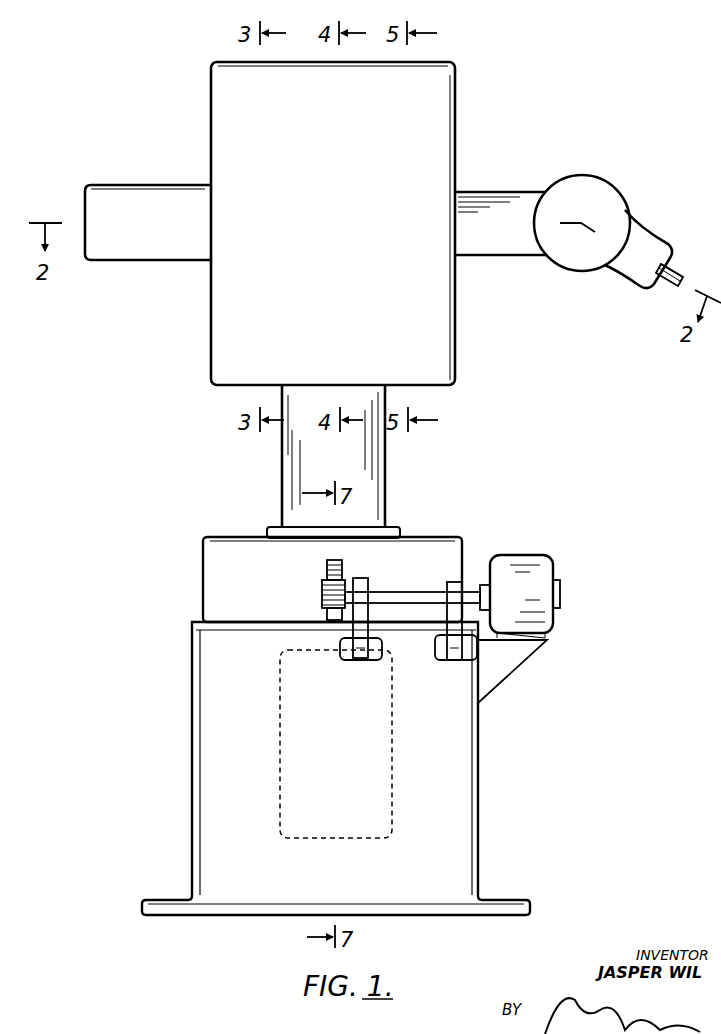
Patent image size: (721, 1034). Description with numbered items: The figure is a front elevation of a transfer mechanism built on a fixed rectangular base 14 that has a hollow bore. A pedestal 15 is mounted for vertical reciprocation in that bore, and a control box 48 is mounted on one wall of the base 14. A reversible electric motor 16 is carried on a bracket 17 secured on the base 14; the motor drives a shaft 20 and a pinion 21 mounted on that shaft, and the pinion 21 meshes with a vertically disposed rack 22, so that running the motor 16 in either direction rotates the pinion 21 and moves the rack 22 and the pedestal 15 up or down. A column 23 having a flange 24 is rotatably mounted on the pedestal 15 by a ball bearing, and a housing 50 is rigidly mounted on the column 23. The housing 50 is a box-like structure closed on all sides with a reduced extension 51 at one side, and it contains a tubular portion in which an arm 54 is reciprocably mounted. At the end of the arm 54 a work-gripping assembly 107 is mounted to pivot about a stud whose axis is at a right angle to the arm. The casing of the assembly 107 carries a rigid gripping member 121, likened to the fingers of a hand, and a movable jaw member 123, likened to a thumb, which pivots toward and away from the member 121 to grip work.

The base 14 is at (475, 804).
The pedestal 15 is at (208, 582).
The electric motor 16 is at (548, 567).
The bracket 17 is at (512, 660).
The shaft 20 is at (405, 593).
The pinion 21 is at (323, 598).
The rack 22 is at (345, 578).
The column 23 is at (385, 470).
The flange 24 is at (400, 530).
The control box 48 is at (392, 747).
The housing 50 is at (442, 333).
The reduced extension 51 is at (128, 197).
The arm 54 is at (500, 197).
The work-gripping assembly 107 is at (601, 178).
The rigid gripping member 121 is at (671, 285).
The movable jaw member 123 is at (679, 274).